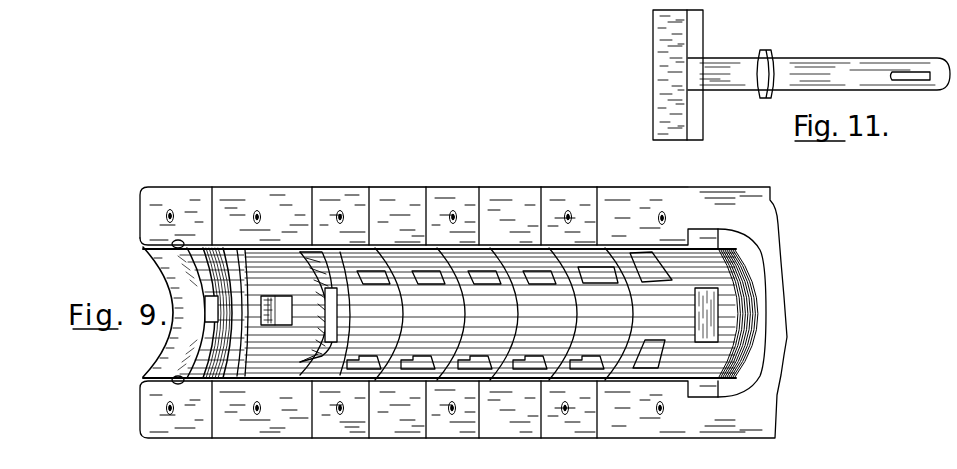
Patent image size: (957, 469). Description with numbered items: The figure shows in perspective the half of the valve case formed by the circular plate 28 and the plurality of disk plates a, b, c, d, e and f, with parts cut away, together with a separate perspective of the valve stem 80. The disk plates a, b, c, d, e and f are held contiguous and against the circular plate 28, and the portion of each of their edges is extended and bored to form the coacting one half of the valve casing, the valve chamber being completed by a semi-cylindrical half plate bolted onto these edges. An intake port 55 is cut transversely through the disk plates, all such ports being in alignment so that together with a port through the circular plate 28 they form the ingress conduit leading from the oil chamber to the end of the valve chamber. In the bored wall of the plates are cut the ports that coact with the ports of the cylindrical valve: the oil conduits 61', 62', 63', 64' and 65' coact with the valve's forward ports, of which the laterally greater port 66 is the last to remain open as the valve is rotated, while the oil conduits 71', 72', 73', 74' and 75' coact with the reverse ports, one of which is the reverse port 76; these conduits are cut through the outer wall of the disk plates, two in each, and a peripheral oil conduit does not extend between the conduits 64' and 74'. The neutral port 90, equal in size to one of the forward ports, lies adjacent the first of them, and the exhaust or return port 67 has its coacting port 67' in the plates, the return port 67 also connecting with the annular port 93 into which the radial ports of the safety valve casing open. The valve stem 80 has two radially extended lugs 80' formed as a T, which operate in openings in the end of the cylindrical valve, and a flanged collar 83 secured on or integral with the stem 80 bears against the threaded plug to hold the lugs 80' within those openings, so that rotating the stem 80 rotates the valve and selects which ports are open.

In FIG. 9, the circular plate 28 is at (246, 198).
In FIG. 9, the disk plate a is at (336, 194).
In FIG. 9, the disk plate b is at (396, 193).
In FIG. 9, the disk plate c is at (445, 193).
In FIG. 9, the disk plate d is at (500, 195).
In FIG. 9, the disk plate e is at (563, 194).
In FIG. 9, the disk plate f is at (613, 203).
In FIG. 9, the intake port 55 is at (713, 305).
In FIG. 9, the neutral port 90 is at (279, 302).
In FIG. 9, the exhaust or return port 67 is at (241, 313).
In FIG. 9, the port in the plates coacting with the exhaust port 67' is at (287, 354).
In FIG. 9, the annular port 93 is at (185, 340).
In FIG. 9, the oil conduit 61' is at (374, 290).
In FIG. 9, the oil conduit 62' is at (428, 290).
In FIG. 9, the oil conduit 63' is at (485, 289).
In FIG. 9, the oil conduit 64' is at (540, 289).
In FIG. 9, the oil conduit 65' is at (598, 275).
In FIG. 9, the valve port 66 is at (651, 267).
In FIG. 9, the oil conduit 71' is at (365, 350).
In FIG. 9, the oil conduit 72' is at (420, 350).
In FIG. 9, the oil conduit 73' is at (479, 349).
In FIG. 9, the oil conduit 74' is at (533, 349).
In FIG. 9, the oil conduit 75' is at (590, 350).
In FIG. 9, the reverse port 76 is at (649, 354).
In FIG. 11, the valve stem 80 is at (819, 60).
In FIG. 11, the radially extended lugs 80' is at (695, 75).
In FIG. 11, the flanged collar 83 is at (768, 54).